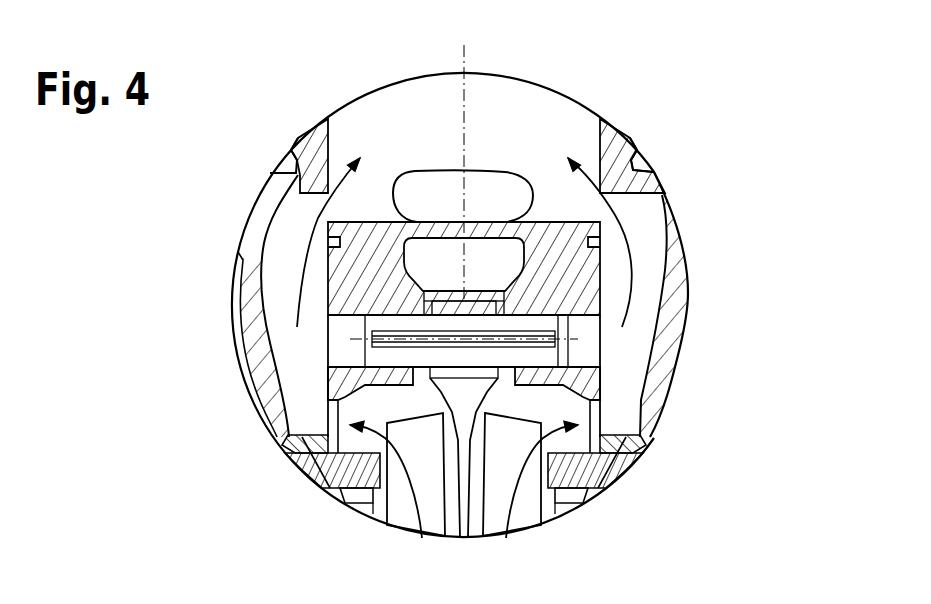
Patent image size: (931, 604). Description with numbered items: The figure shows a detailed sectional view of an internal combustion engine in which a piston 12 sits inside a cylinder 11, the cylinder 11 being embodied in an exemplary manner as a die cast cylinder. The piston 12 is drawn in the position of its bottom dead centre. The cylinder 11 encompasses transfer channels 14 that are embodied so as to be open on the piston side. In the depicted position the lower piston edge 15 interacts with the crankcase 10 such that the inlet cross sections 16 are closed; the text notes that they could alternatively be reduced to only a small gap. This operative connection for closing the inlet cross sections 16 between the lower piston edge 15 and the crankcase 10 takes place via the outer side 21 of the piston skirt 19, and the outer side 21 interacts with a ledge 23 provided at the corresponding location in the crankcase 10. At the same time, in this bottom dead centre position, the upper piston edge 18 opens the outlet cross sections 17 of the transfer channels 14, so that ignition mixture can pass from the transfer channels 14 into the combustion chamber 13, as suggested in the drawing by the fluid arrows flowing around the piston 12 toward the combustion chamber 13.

The crankcase 10 is at (329, 488).
The cylinder 11 is at (655, 193).
The piston 12 is at (583, 293).
The combustion chamber 13 is at (425, 115).
The transfer channels 14 is at (297, 347).
The lower piston edge 15 is at (348, 505).
The inlet cross sections 16 is at (422, 538).
The outlet cross sections 17 is at (314, 210).
The upper piston edge 18 is at (541, 221).
The piston skirt 19 is at (318, 484).
The outer side of the piston skirt 21 is at (322, 432).
The ledge 23 is at (295, 467).